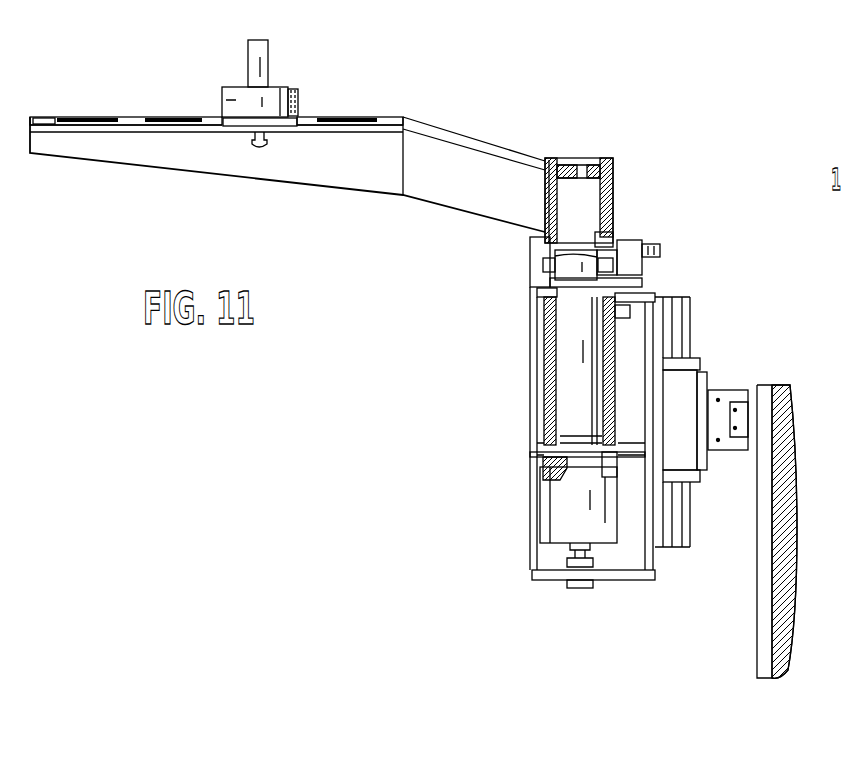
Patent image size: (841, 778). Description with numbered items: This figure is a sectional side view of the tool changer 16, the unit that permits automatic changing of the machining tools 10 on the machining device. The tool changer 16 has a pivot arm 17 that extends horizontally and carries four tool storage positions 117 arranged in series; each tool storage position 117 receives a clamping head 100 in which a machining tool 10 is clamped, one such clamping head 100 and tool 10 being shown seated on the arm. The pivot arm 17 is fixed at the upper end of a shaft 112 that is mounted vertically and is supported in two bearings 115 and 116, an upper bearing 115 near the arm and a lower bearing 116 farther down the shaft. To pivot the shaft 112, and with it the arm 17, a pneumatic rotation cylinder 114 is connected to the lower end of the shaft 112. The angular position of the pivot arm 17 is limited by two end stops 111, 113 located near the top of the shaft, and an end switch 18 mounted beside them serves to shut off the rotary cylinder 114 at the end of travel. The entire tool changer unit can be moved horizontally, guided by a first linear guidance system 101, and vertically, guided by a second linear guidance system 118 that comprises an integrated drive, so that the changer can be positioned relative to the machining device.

The machining tool 10 is at (268, 53).
The tool changer 16 is at (612, 170).
The pivot arm 17 is at (457, 158).
The end switch 18 is at (632, 242).
The clamping head 100 is at (222, 100).
The first linear guidance system 101 is at (750, 420).
The end stop 111 is at (548, 265).
The shaft 112 is at (572, 352).
The end stop 113 is at (642, 267).
The pneumatic rotation cylinder 114 is at (562, 512).
The bearing 115 is at (532, 296).
The bearing 116 is at (547, 448).
The tool storage position 117 is at (88, 116).
The second linear guidance system 118 is at (683, 532).